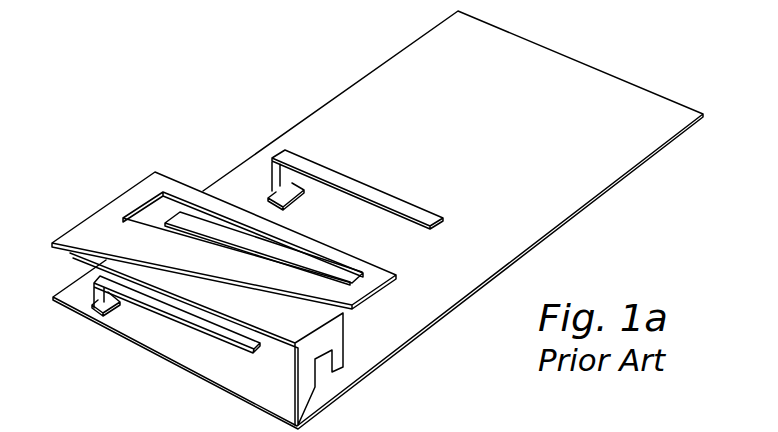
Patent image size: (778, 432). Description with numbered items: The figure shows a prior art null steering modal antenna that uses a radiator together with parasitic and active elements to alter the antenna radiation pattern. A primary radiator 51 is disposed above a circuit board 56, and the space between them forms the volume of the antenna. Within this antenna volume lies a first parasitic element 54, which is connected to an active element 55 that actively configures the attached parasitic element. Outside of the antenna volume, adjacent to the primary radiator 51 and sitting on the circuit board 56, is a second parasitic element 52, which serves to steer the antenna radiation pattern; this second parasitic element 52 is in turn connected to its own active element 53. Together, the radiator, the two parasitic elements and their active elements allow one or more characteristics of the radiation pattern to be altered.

The primary radiator 51 is at (87, 227).
The second parasitic element 52 is at (392, 197).
The active element 53 is at (297, 192).
The first parasitic element 54 is at (170, 320).
The active element 55 is at (100, 308).
The circuit board 56 is at (370, 77).